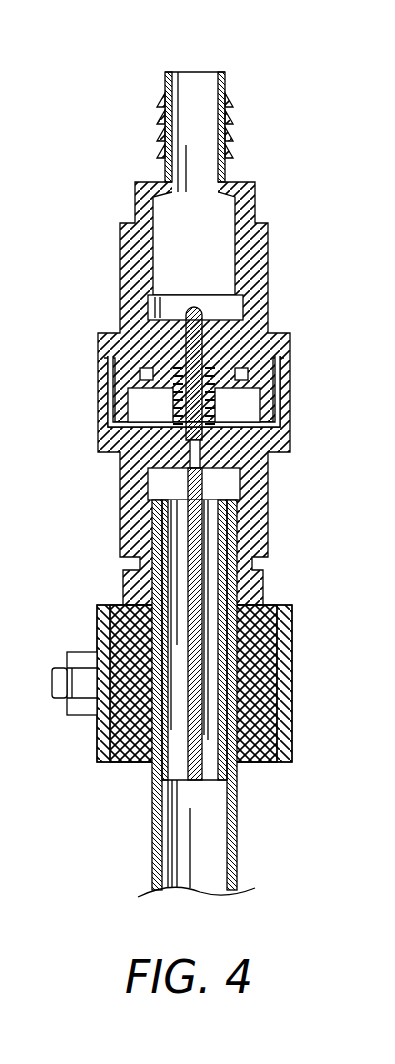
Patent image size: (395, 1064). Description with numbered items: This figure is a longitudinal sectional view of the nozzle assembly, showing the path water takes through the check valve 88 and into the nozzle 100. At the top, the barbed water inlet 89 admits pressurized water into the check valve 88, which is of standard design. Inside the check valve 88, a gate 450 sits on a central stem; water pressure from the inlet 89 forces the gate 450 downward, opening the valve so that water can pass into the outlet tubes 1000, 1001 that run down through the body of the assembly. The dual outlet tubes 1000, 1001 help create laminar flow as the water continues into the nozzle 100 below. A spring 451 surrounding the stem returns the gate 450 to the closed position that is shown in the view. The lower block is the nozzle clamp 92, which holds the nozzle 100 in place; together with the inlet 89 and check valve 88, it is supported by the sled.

The water inlet 89 is at (185, 88).
The gate 450 is at (157, 325).
The check valve 88 is at (99, 388).
The spring 451 is at (172, 407).
The nozzle clamp 92 is at (97, 625).
The outlet tube 1000 is at (152, 782).
The outlet tube 1001 is at (237, 770).
The nozzle 100 is at (152, 830).